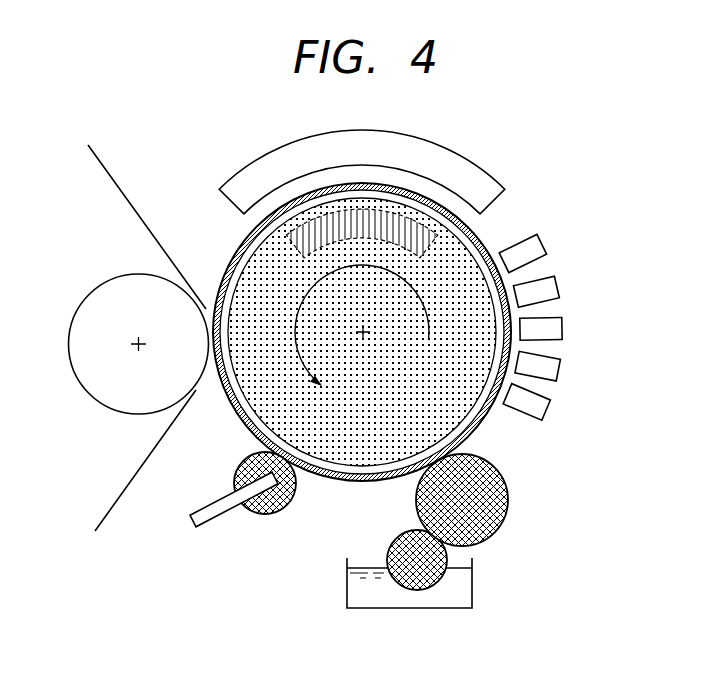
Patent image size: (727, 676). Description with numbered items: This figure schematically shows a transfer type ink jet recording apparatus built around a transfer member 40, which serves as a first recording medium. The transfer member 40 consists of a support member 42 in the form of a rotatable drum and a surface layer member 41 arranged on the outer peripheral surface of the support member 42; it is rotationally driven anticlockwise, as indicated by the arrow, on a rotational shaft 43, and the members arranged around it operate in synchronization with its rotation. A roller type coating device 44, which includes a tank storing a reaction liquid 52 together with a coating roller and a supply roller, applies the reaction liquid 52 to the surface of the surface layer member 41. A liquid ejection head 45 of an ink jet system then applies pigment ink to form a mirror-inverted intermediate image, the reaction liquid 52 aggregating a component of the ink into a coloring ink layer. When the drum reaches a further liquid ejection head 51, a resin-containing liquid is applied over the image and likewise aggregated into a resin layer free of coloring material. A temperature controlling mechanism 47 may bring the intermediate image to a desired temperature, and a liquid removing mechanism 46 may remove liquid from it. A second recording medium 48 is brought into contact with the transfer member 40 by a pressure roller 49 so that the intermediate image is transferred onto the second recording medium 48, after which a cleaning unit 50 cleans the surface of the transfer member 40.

The transfer member 40 is at (432, 337).
The surface layer member 41 is at (478, 413).
The support member 42 is at (427, 417).
The rotational shaft 43 is at (366, 336).
The roller type coating device 44 is at (505, 518).
The liquid ejection head 45 is at (571, 264).
The liquid removing mechanism 46 is at (457, 153).
The temperature controlling mechanism 47 is at (427, 233).
The second recording medium 48 is at (113, 173).
The pressure roller 49 is at (112, 413).
The cleaning unit 50 is at (262, 515).
The liquid ejection head 51 is at (547, 250).
The reaction liquid 52 is at (473, 585).